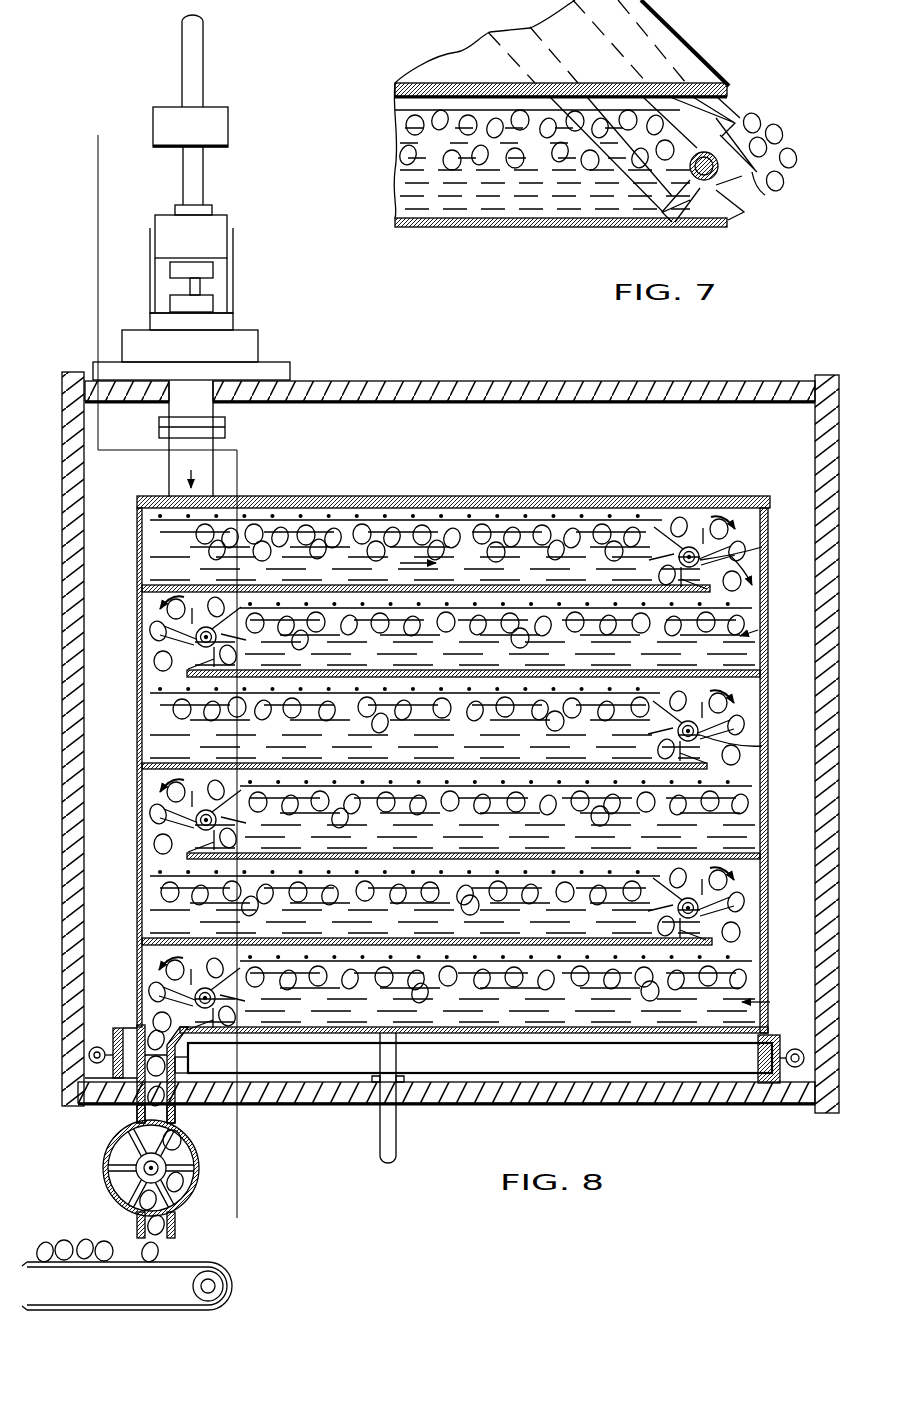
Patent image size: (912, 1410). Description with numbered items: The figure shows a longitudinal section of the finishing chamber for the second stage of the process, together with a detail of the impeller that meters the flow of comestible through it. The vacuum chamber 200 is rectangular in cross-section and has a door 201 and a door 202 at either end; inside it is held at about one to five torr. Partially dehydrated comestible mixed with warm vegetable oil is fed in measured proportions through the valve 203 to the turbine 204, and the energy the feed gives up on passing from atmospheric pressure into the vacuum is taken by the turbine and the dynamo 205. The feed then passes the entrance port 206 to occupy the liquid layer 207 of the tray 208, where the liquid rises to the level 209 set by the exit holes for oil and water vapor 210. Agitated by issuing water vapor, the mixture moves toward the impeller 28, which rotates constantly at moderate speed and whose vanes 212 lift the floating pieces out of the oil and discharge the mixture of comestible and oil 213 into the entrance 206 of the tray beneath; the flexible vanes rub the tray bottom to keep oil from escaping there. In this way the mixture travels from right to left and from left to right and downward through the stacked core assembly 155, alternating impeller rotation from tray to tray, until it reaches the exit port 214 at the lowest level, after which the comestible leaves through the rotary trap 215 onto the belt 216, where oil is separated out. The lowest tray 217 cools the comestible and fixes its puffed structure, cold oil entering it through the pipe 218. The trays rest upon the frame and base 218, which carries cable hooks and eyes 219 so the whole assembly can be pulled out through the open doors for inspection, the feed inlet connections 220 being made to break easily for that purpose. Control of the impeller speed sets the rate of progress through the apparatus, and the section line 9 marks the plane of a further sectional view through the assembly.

In FIG. 8, the section line 9- 9 is at (96, 162).
In FIG. 7, the impeller 28 is at (737, 196).
In FIG. 8, the impeller 28 is at (188, 637).
In FIG. 8, the finishing chamber tray core assembly 155 is at (453, 740).
In FIG. 8, the vacuum chamber 200 is at (451, 728).
In FIG. 8, the door 201 is at (63, 448).
In FIG. 8, the door 202 is at (840, 500).
In FIG. 8, the valve 203 is at (230, 118).
In FIG. 8, the turbine 204 is at (260, 340).
In FIG. 8, the dynamo 205 is at (228, 222).
In FIG. 8, the entrance port 206 is at (471, 491).
In FIG. 7, the liquid layer 207 is at (637, 222).
In FIG. 8, the liquid layer 207 is at (426, 574).
In FIG. 7, the tray 208 is at (552, 226).
In FIG. 8, the tray 208 is at (165, 582).
In FIG. 8, the liquid level 209 is at (441, 520).
In FIG. 8, the exit holes for oil and water vapor 210 is at (516, 518).
In FIG. 7, the vanes 212 is at (765, 195).
In FIG. 8, the vanes 212 is at (765, 745).
In FIG. 7, the mixture of comestible and oil 213 is at (811, 134).
In FIG. 8, the mixture of comestible and oil 213 is at (762, 566).
In FIG. 8, the exit port 214 is at (140, 1022).
In FIG. 8, the rotary trap 215 is at (103, 1168).
In FIG. 8, the belt 216 is at (137, 1270).
In FIG. 8, the lowest tray 217 is at (766, 1005).
In FIG. 8, the frame and base 218 is at (630, 1070).
In FIG. 8, the cable hooks and eyes 219 is at (90, 1053).
In FIG. 8, the feed inlet connection 220 is at (225, 428).